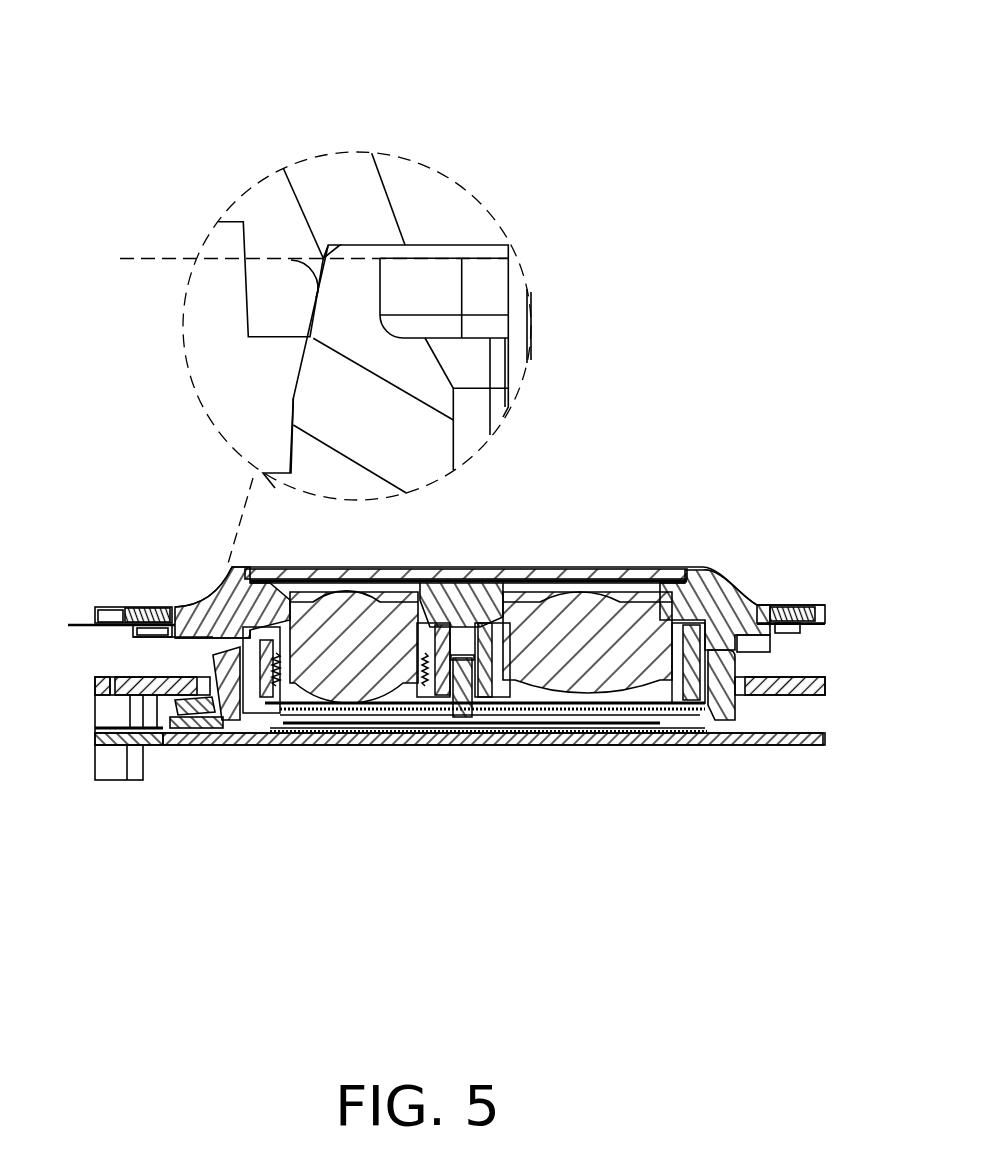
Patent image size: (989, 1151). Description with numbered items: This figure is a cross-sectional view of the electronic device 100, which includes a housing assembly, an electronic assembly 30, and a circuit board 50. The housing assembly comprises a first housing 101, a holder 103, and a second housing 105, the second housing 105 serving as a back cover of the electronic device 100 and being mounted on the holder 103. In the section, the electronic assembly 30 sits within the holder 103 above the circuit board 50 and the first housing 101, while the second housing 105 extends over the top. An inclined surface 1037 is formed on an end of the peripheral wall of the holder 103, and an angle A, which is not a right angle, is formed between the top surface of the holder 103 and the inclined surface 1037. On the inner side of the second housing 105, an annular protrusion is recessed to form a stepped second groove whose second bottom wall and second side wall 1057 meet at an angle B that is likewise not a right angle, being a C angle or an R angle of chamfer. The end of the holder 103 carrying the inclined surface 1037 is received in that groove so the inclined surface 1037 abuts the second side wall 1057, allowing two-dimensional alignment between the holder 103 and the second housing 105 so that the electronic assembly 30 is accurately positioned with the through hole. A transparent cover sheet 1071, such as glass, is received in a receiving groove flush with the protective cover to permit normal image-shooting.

The electronic device 100 is at (95, 33).
The second housing 105 is at (113, 610).
The second side wall 1057 is at (210, 640).
The inclined surface 1037 is at (200, 660).
The circuit board 50 is at (805, 674).
The first housing 101 is at (815, 735).
The holder 103 is at (720, 705).
The cover sheet 1071 is at (484, 572).
The electronic assembly 30 is at (580, 622).
The angle A is at (313, 297).
The angle B is at (337, 251).